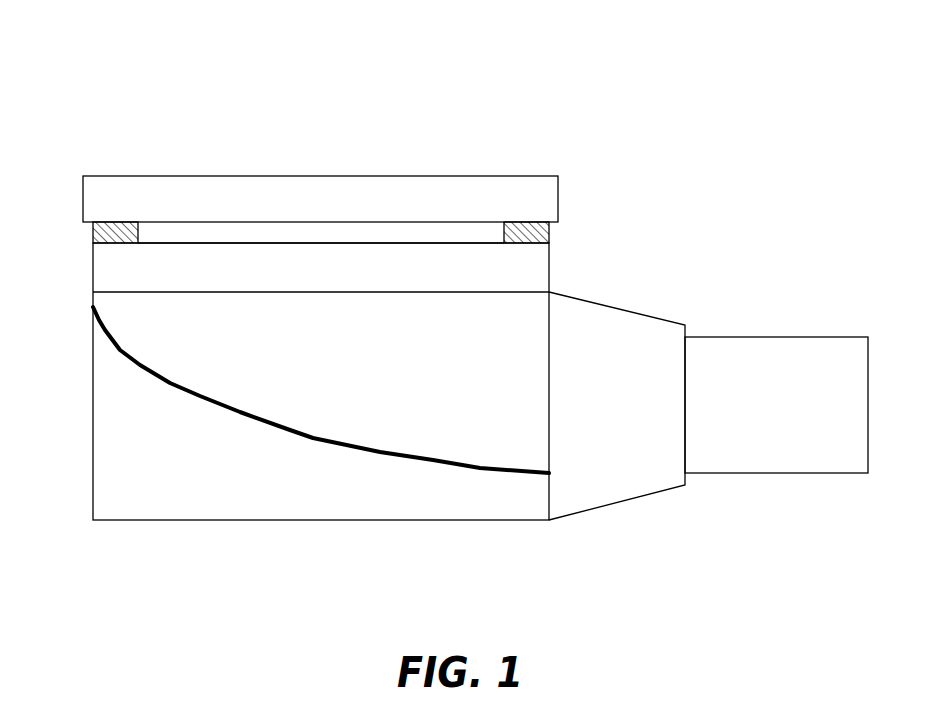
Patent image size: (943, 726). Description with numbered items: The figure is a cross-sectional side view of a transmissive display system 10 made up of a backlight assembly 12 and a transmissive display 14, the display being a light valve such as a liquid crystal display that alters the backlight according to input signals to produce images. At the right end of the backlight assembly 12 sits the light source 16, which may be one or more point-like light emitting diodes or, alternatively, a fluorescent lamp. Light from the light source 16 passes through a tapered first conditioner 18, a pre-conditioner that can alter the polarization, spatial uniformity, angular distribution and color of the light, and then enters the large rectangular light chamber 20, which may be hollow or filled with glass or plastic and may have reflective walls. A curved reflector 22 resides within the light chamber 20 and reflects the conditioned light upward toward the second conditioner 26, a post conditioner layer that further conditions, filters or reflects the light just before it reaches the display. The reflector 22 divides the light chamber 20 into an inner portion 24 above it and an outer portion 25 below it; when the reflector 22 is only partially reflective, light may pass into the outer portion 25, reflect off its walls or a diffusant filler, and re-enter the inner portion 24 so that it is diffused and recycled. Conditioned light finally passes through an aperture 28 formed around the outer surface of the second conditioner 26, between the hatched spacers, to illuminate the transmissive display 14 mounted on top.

The transmissive display system 10 is at (605, 198).
The backlight assembly 12 is at (645, 282).
The transmissive display 14 is at (82, 199).
The light source 16 is at (763, 337).
The first conditioner 18 is at (612, 503).
The light chamber 20 is at (93, 398).
The reflector 22 is at (313, 438).
The inner portion 24 is at (433, 393).
The outer portion 25 is at (170, 468).
The second conditioner 26 is at (93, 265).
The aperture 28 is at (307, 233).